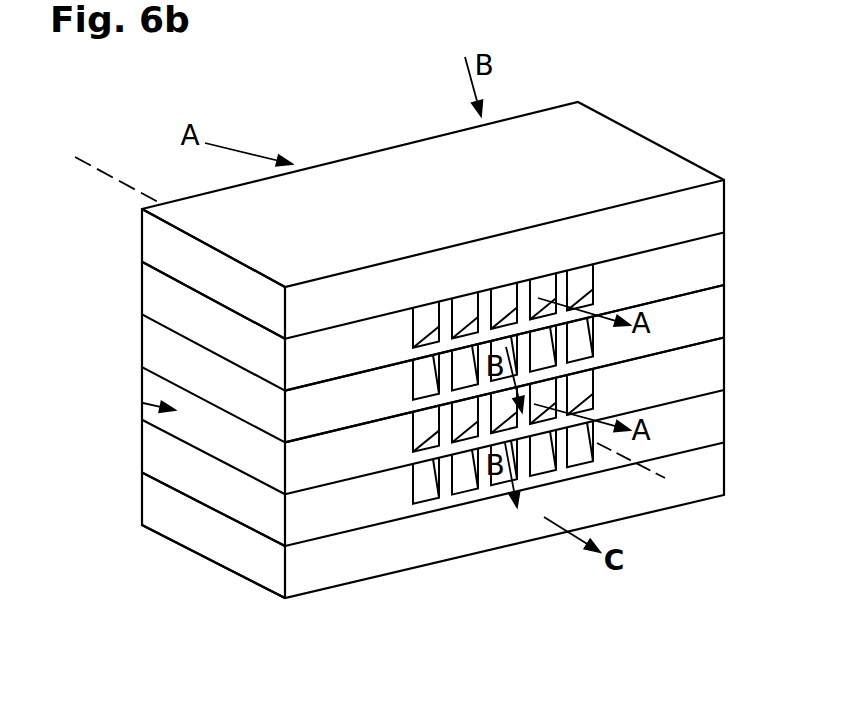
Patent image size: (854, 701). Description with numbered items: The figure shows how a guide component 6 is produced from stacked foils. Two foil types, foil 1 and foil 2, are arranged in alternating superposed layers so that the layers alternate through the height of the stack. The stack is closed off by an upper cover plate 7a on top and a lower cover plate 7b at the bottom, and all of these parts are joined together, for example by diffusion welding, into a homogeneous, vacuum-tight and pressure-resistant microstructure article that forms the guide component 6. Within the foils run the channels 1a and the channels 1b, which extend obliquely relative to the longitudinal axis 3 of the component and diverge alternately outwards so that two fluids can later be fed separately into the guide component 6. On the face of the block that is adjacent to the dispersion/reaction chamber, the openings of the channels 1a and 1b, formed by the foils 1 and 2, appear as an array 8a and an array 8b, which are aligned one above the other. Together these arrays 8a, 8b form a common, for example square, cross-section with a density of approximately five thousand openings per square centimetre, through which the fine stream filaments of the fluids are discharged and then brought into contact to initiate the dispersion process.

The foil 1 is at (327, 356).
The channels 1a is at (582, 285).
The channels 1b is at (584, 346).
The foil 2 is at (367, 397).
The longitudinal axis 3 is at (124, 182).
The guide component 6 is at (143, 403).
The upper cover plate 7a is at (162, 254).
The lower cover plate 7b is at (156, 510).
The array 8a is at (413, 288).
The array 8b is at (595, 487).